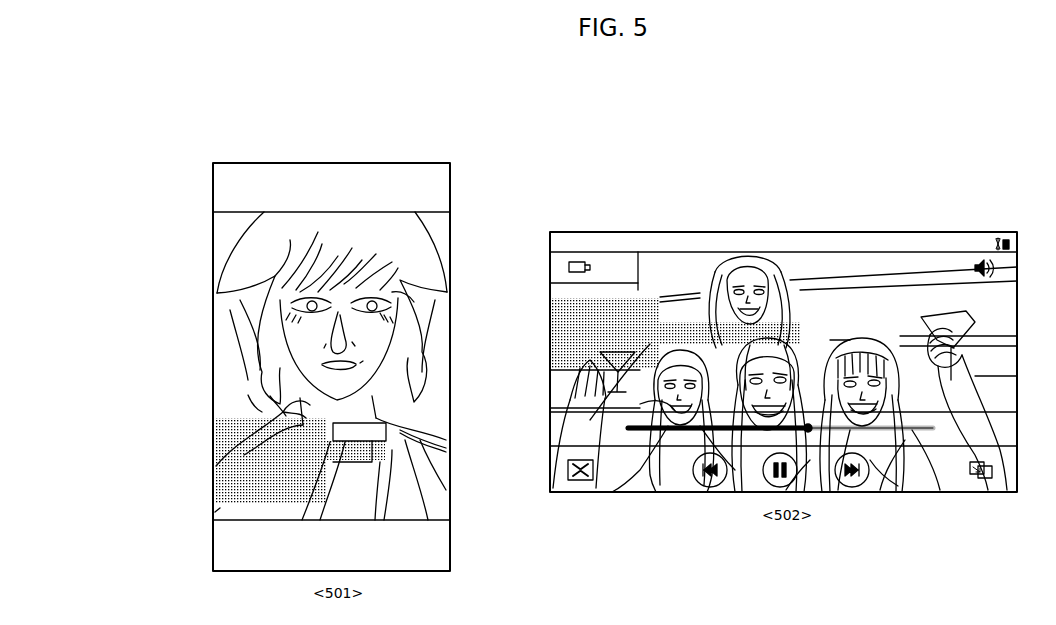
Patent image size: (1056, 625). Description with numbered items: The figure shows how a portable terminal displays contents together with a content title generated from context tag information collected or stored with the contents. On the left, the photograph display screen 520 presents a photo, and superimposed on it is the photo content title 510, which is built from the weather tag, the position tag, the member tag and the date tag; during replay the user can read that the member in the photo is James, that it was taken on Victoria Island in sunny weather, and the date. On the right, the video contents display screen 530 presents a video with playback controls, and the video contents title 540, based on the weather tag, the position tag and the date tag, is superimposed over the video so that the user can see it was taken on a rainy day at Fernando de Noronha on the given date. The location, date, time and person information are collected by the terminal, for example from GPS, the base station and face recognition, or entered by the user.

The photo content title 510 is at (212, 460).
The photograph display screen 520 is at (452, 205).
The video contents display screen 530 is at (987, 231).
The video contents title 540 is at (549, 322).